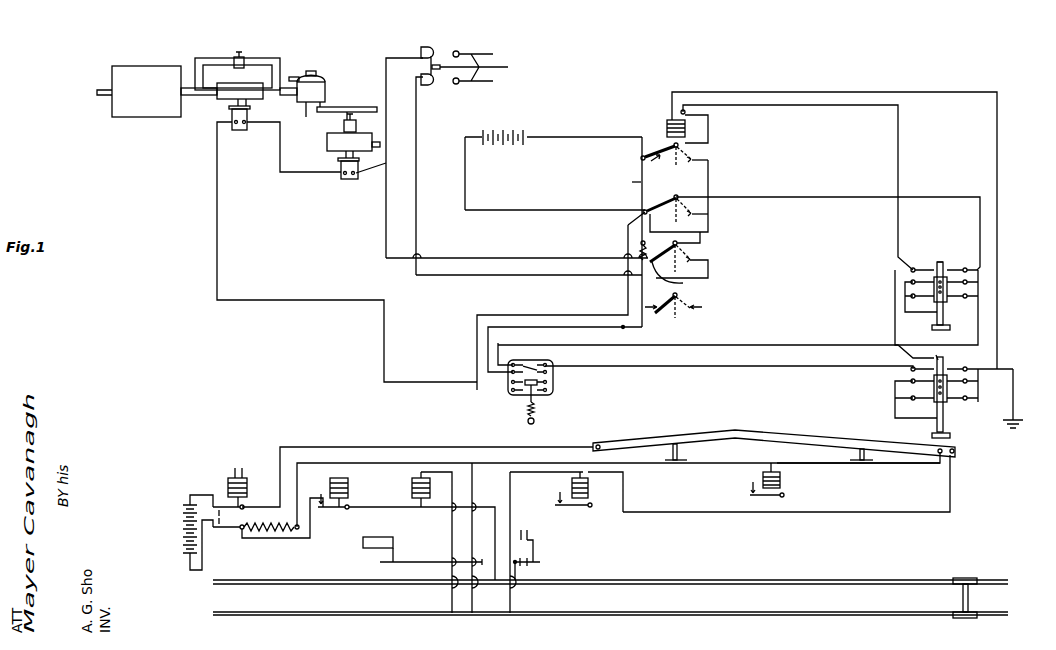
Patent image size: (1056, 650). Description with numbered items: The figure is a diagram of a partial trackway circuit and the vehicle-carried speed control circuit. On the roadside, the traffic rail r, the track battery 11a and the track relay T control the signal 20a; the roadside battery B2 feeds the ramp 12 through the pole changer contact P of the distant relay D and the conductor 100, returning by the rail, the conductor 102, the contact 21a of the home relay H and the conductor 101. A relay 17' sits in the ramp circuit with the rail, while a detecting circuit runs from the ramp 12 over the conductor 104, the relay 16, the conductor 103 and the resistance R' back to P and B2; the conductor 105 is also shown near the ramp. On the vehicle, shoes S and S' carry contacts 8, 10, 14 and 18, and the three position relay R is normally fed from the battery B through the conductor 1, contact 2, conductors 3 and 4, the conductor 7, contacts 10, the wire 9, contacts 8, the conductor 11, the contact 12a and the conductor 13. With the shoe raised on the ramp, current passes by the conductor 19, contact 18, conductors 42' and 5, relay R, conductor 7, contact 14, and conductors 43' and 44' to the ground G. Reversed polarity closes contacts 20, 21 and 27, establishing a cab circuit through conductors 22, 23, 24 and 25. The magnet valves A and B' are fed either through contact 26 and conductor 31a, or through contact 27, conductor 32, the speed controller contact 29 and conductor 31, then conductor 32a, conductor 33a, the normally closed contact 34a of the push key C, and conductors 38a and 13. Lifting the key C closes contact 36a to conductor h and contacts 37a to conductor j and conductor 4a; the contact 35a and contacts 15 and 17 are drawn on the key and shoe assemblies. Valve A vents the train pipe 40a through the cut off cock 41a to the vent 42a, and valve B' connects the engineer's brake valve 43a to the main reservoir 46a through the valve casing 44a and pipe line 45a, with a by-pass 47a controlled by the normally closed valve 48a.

The main reservoir 46a is at (140, 108).
The pipe line 45a is at (210, 97).
The by-pass 47a is at (266, 60).
The normally closed valve 48a is at (242, 55).
The valve casing 44a is at (253, 97).
The engineer's brake valve 43a is at (318, 92).
The train pipe 40a is at (325, 108).
The cut off cock 41a is at (344, 128).
The vent 42a is at (363, 142).
The conductor 32a is at (292, 173).
The conductor 33a is at (330, 252).
The conductor 31 is at (392, 55).
The conductor 32 is at (417, 108).
The speed controller contact 29 is at (447, 51).
The conductor 31a is at (465, 257).
The conductor 38a is at (523, 313).
The conductor 13 is at (542, 211).
The conductor 1 is at (583, 135).
The contact 2 is at (641, 159).
The conductor 25 is at (627, 182).
The contact 12a is at (652, 208).
The conductor 24 is at (630, 236).
The conductor 7 is at (738, 90).
The conductor 4 is at (685, 113).
The conductor 3 is at (710, 126).
The contact 20 is at (700, 158).
The conductor 22 is at (709, 180).
The contact 21 is at (700, 213).
The conductor 23 is at (702, 243).
The contact 27 is at (703, 259).
The contact 26 is at (679, 278).
The conductor 5 is at (823, 105).
The conductor 11 is at (937, 197).
The contact 17 is at (912, 255).
The core 15 is at (942, 266).
The contacts of shoe S 8 is at (964, 268).
The conductor 42' is at (897, 301).
The wire 9 is at (975, 327).
The contact 14 is at (931, 351).
The conductor 43' is at (982, 357).
The contact 18 is at (911, 382).
The conductor 19 is at (895, 410).
The contacts of shoe S' 10 is at (950, 400).
The conductor 44' is at (1003, 409).
The conductor 4a is at (550, 385).
The armature 35a is at (545, 393).
The push button contact 34a is at (520, 395).
The contact 36a is at (530, 350).
The contacts 37a is at (547, 362).
The conductor 100 is at (334, 445).
The conductor 101 is at (276, 539).
The conductor 102 is at (384, 506).
The conductor 103 is at (388, 462).
The conductor 104 is at (880, 465).
The wire 105 is at (733, 512).
The contact 21a is at (330, 512).
The signal 20a is at (396, 548).
The track battery 11a is at (538, 549).
The ramp 12 is at (672, 431).
The relay 16 is at (783, 482).
The relay 17' is at (589, 492).
The battery B is at (553, 127).
The electromagnetic valve B' is at (239, 127).
The electromagnetic valve A is at (350, 180).
The three position relay R is at (663, 126).
The shoe S is at (944, 296).
The shoe S' is at (939, 398).
The ground G is at (1029, 443).
The push key C is at (551, 425).
The conductor h is at (748, 344).
The conductor j is at (752, 366).
The roadside battery B2 is at (194, 502).
The pole changer contact P is at (228, 517).
The distant relay D is at (248, 486).
The resistance R' is at (271, 519).
The home relay H is at (350, 488).
The track relay T is at (410, 489).
The traffic rail r is at (573, 578).